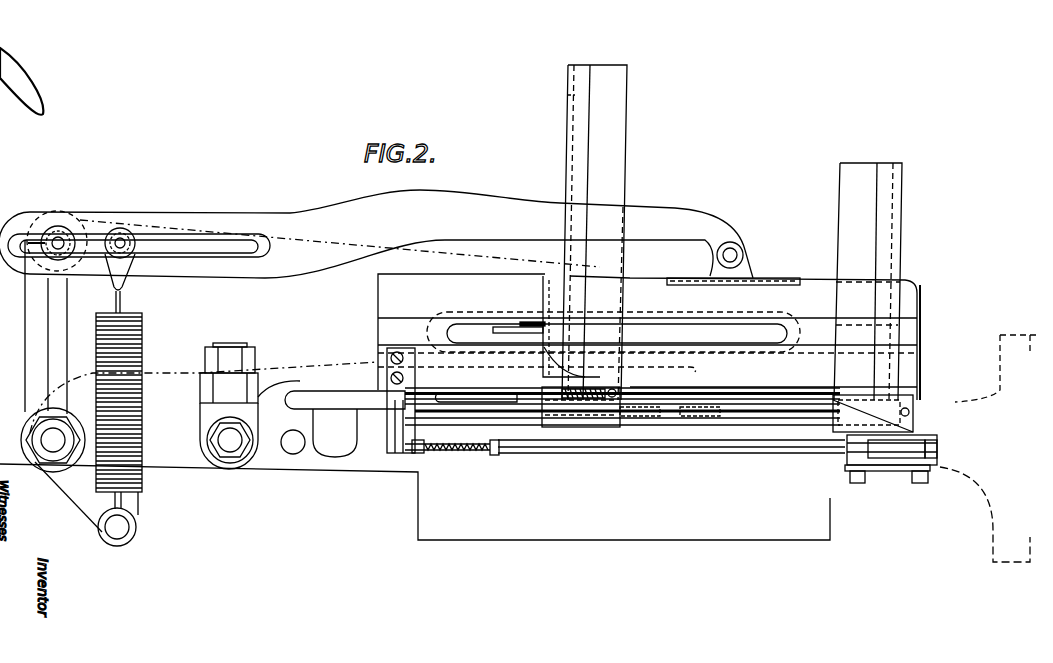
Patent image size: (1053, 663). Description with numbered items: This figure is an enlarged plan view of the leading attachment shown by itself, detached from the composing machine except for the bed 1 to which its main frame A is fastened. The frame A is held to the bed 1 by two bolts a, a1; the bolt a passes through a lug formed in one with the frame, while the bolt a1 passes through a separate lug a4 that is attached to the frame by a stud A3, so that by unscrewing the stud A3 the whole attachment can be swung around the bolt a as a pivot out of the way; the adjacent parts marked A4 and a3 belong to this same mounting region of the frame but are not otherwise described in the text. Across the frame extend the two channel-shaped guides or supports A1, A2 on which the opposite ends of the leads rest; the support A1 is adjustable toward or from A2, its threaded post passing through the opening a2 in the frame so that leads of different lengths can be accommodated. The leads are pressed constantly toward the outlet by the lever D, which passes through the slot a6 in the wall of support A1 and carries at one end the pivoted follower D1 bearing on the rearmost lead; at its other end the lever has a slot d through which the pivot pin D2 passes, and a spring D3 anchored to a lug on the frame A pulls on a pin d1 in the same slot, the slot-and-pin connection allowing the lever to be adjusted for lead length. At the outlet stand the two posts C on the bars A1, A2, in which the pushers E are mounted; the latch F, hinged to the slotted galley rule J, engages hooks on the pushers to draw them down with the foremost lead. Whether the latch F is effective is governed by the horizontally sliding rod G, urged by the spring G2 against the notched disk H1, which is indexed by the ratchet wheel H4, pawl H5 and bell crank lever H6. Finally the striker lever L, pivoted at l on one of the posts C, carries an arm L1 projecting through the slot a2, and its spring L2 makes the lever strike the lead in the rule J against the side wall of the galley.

The bed 1 is at (415, 502).
The main frame A is at (921, 306).
The guide or support A1 is at (605, 157).
The guide or support A2 is at (895, 199).
The stud A3 is at (240, 366).
The nut A4 is at (229, 318).
The bolt a is at (50, 442).
The bolt a1 is at (229, 443).
The opening or slot a2 is at (738, 335).
The link a3 is at (63, 458).
The lug a4 is at (245, 458).
The slot a6 is at (568, 108).
The face plate or post C is at (579, 413).
The lever D is at (285, 245).
The plate or follower D1 is at (762, 272).
The pivot pin D2 is at (60, 240).
The spring D3 is at (143, 338).
The slot d is at (25, 240).
The pin d1 is at (122, 240).
The slide or pusher E is at (577, 405).
The latch F is at (765, 402).
The rod G is at (800, 452).
The spring G2 is at (448, 456).
The disk H1 is at (935, 456).
The ratchet wheel H4 is at (938, 447).
The pawl H5 is at (902, 447).
The bell crank lever H6 is at (905, 428).
The galley rule J is at (723, 396).
The lever L is at (520, 392).
The arm L1 is at (526, 327).
The spring L2 is at (600, 412).
The pivot l is at (545, 326).